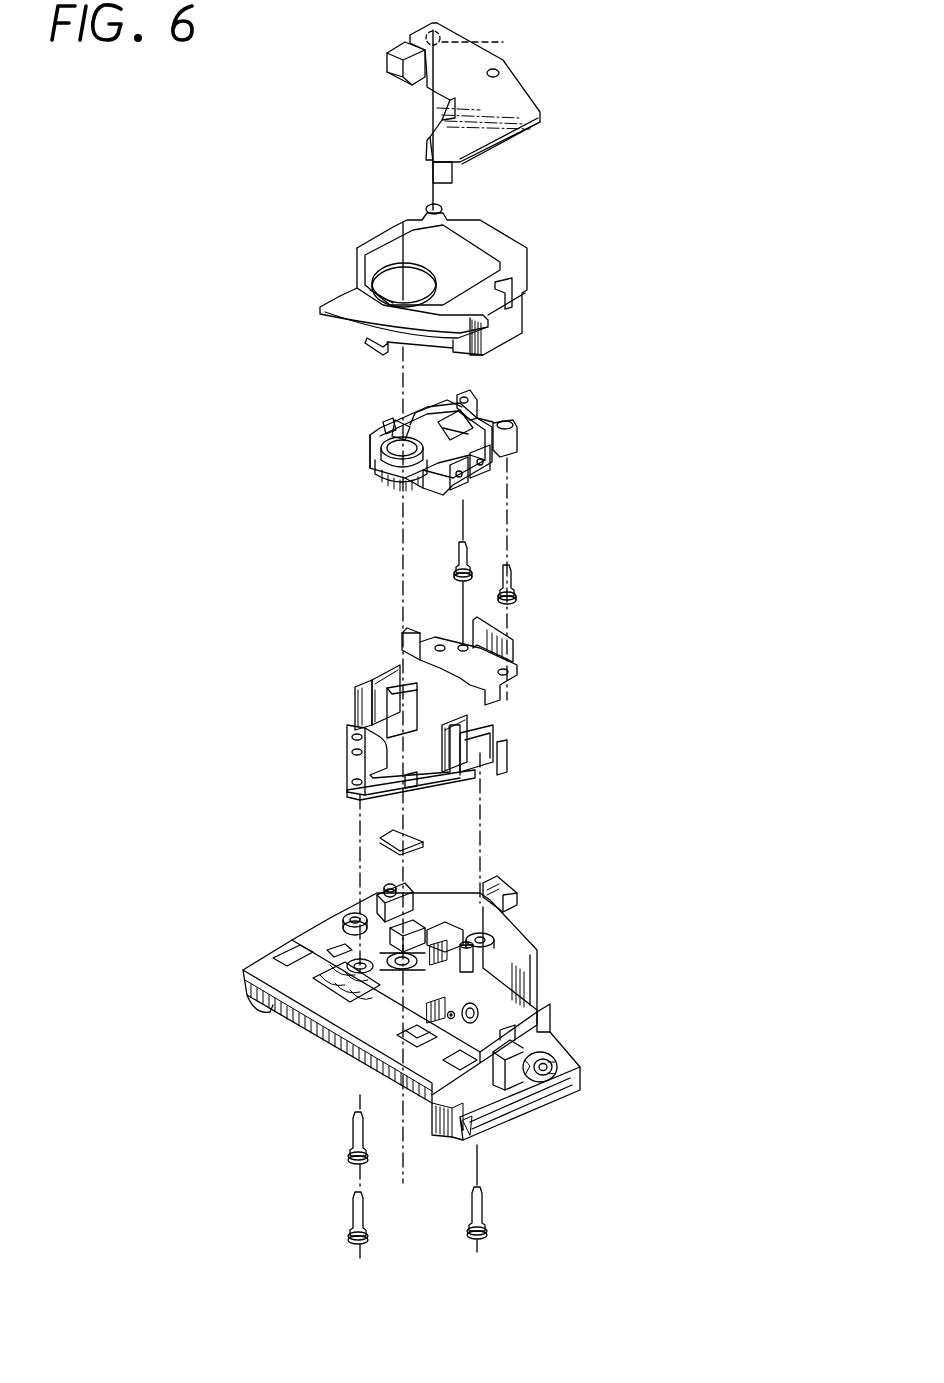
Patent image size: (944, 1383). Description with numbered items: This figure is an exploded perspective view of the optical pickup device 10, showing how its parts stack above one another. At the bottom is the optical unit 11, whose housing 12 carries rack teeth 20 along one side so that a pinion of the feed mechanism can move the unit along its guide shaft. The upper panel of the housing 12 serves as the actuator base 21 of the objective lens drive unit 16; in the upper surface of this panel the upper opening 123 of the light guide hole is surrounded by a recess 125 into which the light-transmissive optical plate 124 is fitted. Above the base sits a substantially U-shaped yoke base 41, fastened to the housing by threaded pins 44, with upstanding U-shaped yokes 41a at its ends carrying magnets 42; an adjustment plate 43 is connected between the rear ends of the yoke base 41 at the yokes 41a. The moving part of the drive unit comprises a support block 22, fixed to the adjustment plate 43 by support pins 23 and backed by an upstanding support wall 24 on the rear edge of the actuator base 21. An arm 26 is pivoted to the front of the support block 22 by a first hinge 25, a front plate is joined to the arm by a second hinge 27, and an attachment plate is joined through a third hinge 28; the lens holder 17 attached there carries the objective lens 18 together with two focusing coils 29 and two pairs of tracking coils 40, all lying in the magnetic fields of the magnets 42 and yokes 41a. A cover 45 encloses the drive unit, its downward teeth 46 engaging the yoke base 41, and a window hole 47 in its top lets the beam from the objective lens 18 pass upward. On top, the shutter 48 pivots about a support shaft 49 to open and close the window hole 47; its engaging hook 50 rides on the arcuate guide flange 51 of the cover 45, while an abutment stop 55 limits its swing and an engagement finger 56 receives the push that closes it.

The optical pickup device 10 is at (246, 213).
The optical unit 11 is at (550, 938).
The housing 12 is at (310, 935).
The objective lens drive unit 16 is at (600, 421).
The lens holder 17 is at (378, 460).
The objective lens 18 is at (393, 480).
The rack teeth 20 is at (320, 1040).
The actuator base 21 is at (375, 903).
The support block 22 is at (515, 432).
The support pins 23 is at (470, 550).
The support wall 24 is at (500, 888).
The first hinge 25 is at (480, 408).
The arm 26 is at (458, 425).
The second hinge 27 is at (412, 420).
The third hinge 28 is at (385, 418).
The focusing coils 29 is at (400, 425).
The tracking coils 40 is at (495, 470).
The yoke base 41 is at (437, 787).
The yokes 41a is at (407, 723).
The magnets 42 is at (380, 675).
The adjustment plate 43 is at (515, 660).
The threaded pins 44 is at (355, 1127).
The cover 45 is at (490, 232).
The teeth 46 is at (362, 342).
The window hole 47 is at (378, 282).
The shutter 48 is at (510, 101).
The support shaft 49 is at (482, 39).
The engaging hook 50 is at (455, 172).
The arcuate guide flange 51 is at (340, 300).
The abutment stop 55 is at (388, 78).
The engagement finger 56 is at (430, 98).
The upper opening 123 is at (410, 935).
The light-transmissive optical plate 124 is at (390, 832).
The recess 125 is at (345, 910).